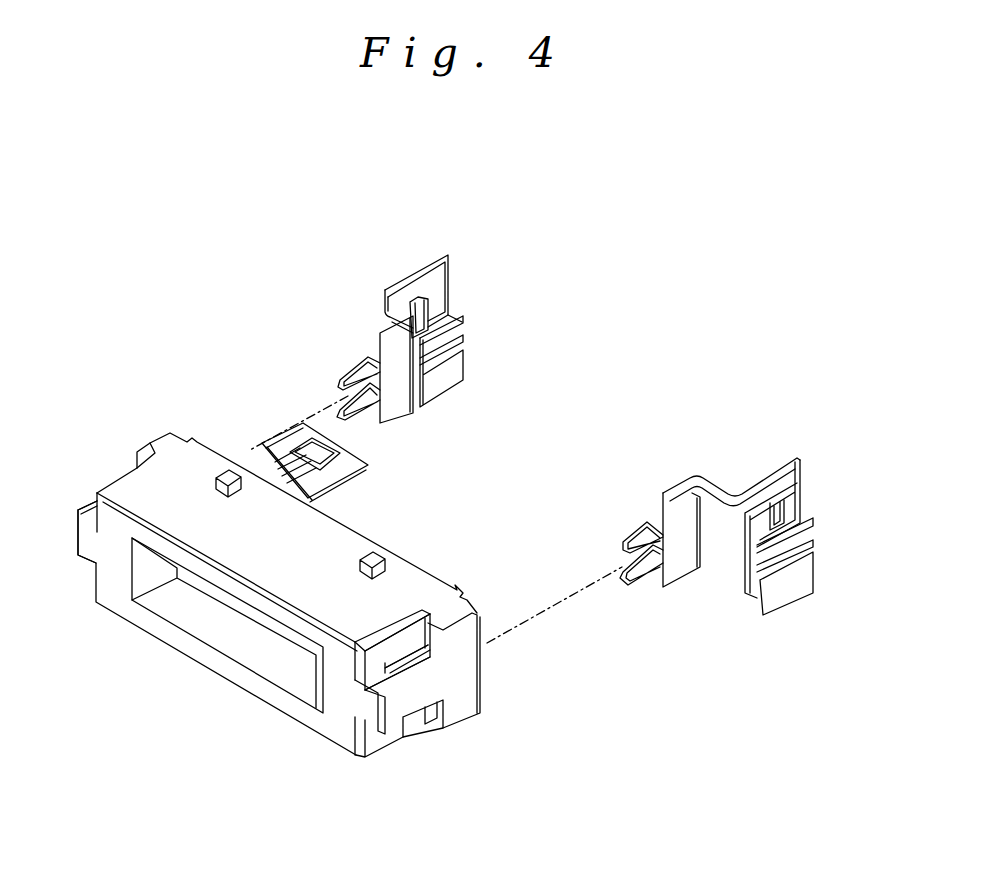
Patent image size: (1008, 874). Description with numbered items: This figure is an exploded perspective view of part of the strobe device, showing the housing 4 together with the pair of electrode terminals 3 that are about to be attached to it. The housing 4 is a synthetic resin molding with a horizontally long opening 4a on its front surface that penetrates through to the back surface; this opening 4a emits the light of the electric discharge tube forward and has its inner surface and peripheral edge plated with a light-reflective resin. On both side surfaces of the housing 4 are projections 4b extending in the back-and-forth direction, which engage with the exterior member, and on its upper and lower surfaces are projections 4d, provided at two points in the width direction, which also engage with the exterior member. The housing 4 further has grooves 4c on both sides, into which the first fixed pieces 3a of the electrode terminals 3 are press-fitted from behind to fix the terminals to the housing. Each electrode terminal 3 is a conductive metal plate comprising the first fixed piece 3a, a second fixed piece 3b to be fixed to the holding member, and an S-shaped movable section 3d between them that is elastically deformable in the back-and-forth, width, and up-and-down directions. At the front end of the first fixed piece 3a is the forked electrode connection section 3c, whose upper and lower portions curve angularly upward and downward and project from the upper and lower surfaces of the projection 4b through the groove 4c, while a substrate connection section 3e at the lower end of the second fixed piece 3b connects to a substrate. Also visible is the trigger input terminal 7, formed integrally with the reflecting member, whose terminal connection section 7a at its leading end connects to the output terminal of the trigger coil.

The electrode terminal 3 is at (584, 440).
The first fixed piece 3a is at (393, 402).
The second fixed piece 3b is at (462, 350).
The electrode connection section 3c is at (340, 377).
The movable section 3d is at (450, 296).
The substrate connection section 3e is at (450, 390).
The housing 4 is at (165, 470).
The opening 4a is at (228, 633).
The projection 4b is at (84, 508).
The groove 4c is at (433, 662).
The projection 4d is at (230, 485).
The trigger input terminal 7 is at (340, 439).
The terminal connection section 7a is at (342, 470).